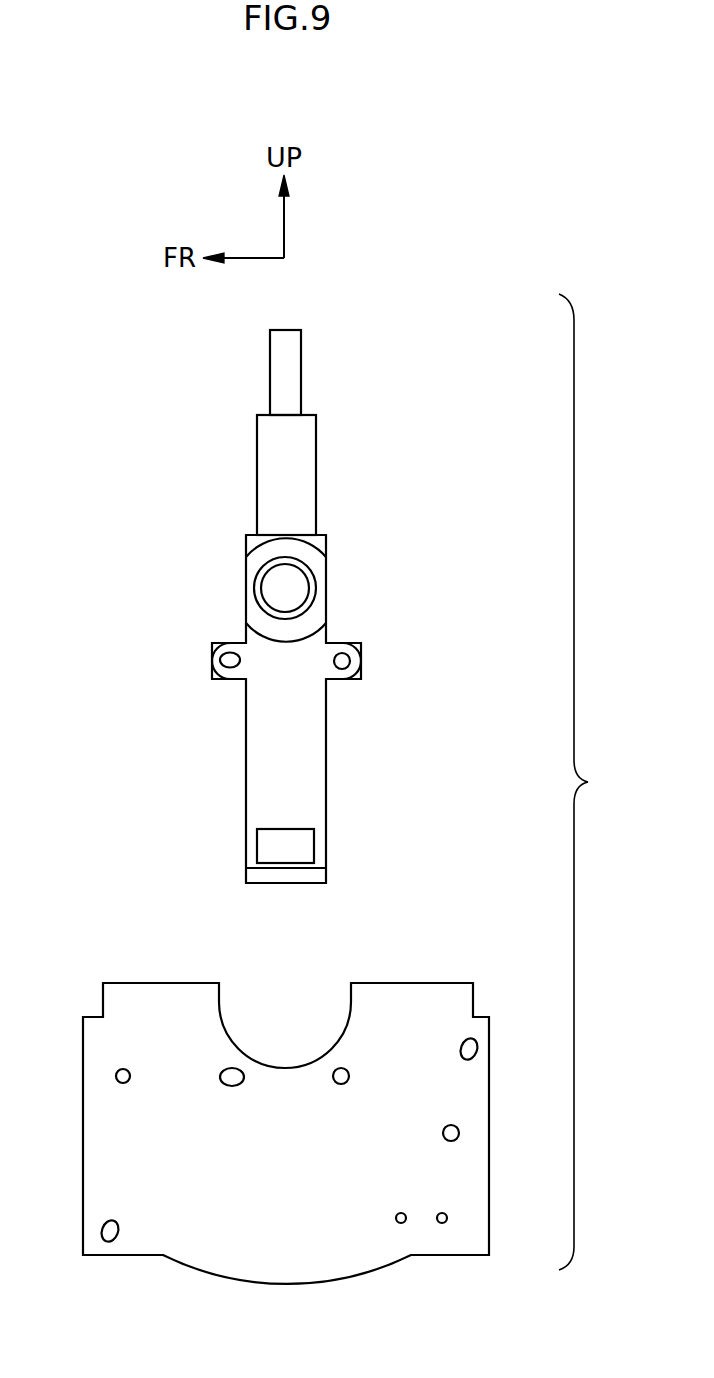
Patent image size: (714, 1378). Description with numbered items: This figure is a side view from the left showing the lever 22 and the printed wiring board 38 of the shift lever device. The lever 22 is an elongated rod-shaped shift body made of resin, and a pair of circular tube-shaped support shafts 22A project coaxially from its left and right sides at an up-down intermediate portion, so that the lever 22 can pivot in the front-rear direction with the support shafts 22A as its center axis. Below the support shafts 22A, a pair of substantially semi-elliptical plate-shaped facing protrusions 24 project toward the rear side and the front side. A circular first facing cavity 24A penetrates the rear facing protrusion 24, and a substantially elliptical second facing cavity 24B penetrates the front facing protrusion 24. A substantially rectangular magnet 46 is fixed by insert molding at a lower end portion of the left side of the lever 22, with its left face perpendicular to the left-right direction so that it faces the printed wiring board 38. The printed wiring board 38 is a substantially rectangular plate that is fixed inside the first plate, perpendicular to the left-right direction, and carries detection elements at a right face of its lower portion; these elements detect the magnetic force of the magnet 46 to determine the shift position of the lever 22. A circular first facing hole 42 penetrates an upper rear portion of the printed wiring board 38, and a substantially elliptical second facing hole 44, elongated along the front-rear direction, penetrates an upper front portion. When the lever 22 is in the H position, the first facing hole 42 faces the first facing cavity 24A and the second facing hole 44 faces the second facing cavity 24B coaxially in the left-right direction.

The lever 22 is at (257, 406).
The support shaft 22A is at (312, 566).
The facing protrusion 24 is at (232, 643).
The first facing cavity 24A is at (351, 665).
The second facing cavity 24B is at (216, 657).
The magnet 46 is at (262, 853).
The printed wiring board 38 is at (106, 985).
The second facing hole 44 is at (230, 1069).
The first facing hole 42 is at (341, 1070).